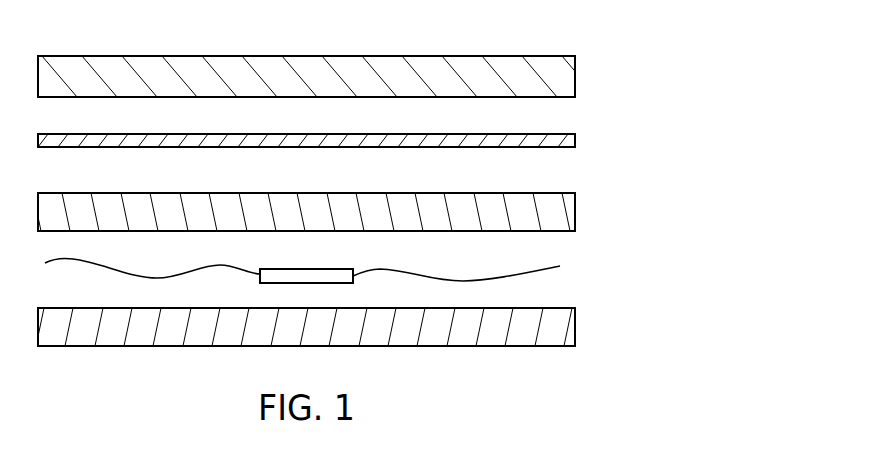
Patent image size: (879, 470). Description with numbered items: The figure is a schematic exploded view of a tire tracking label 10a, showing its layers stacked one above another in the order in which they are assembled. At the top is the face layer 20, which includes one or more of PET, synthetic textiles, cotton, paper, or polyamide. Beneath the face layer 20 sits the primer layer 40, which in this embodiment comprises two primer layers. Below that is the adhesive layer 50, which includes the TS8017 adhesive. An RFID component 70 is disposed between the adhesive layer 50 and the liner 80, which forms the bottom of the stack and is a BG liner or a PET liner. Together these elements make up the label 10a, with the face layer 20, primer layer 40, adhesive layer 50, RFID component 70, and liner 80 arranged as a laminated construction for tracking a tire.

The label 10a is at (381, 176).
The face layer 20 is at (577, 73).
The primer layer 40 is at (577, 140).
The adhesive layer 50 is at (577, 208).
The RFID component 70 is at (363, 257).
The liner 80 is at (577, 325).